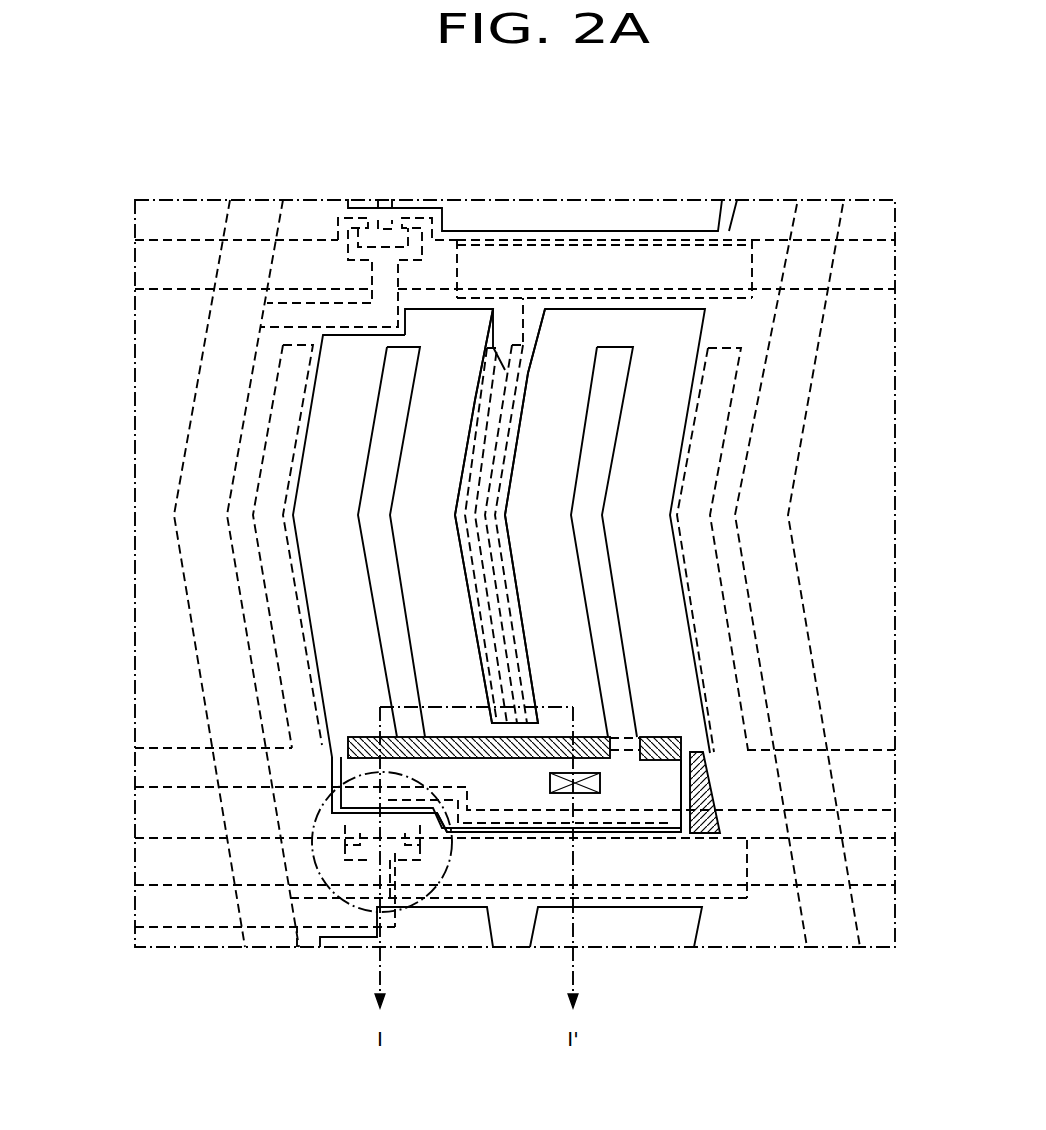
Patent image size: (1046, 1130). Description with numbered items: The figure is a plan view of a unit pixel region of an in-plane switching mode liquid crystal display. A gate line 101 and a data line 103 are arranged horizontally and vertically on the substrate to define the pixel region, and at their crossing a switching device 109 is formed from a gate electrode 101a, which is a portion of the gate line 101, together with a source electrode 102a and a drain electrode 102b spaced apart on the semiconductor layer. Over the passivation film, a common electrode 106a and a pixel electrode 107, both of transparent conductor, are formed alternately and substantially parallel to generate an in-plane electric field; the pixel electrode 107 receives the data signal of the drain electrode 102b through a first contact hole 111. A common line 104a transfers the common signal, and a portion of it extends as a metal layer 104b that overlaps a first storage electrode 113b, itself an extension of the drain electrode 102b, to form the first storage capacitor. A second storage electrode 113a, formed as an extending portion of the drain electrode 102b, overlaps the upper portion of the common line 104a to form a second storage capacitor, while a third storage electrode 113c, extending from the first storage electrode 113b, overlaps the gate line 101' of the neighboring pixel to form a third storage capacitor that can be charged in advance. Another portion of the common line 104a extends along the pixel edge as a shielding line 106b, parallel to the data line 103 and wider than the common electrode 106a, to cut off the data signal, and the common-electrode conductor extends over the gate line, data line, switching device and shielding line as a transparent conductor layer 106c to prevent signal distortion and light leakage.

The gate line 101 is at (768, 622).
The gate line of a neighbor pixel 101' is at (786, 537).
The gate electrode 101a is at (420, 820).
The source electrode 102a is at (347, 840).
The drain electrode 102b is at (378, 828).
The data line 103 is at (222, 343).
The common line 104a is at (747, 783).
The metal layer 104b is at (503, 370).
The common electrode 106a is at (528, 375).
The shielding line 106b is at (290, 391).
The transparent conductor layer 106c is at (253, 428).
The pixel electrode 107 is at (618, 367).
The switching device 109 is at (410, 900).
The first contact hole 111 is at (603, 793).
The second storage electrode 113a is at (660, 748).
The first storage electrode 113b is at (512, 380).
The third storage electrode 113c is at (727, 240).